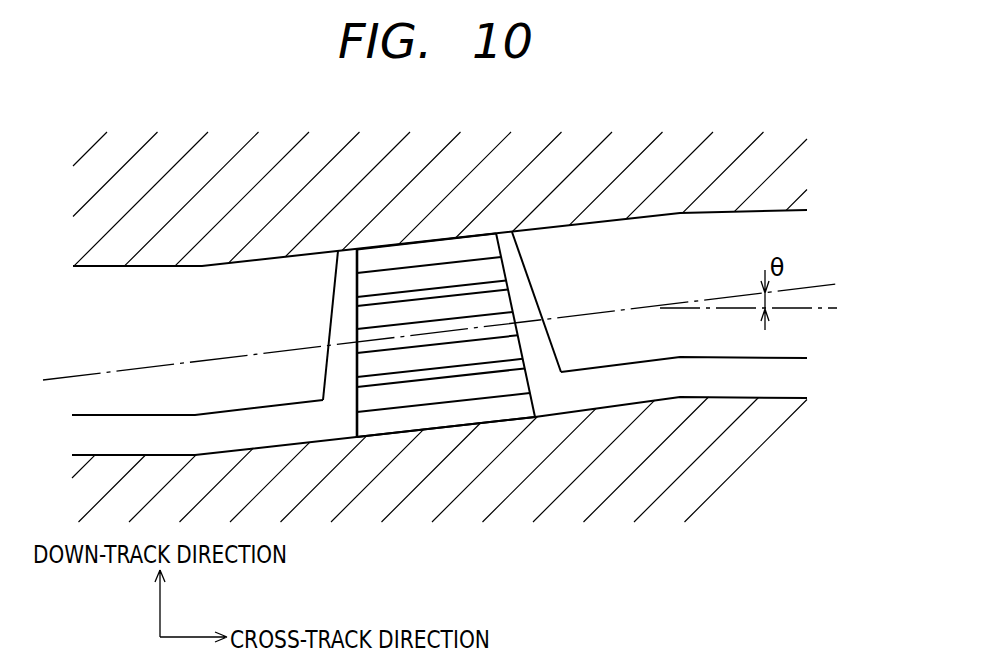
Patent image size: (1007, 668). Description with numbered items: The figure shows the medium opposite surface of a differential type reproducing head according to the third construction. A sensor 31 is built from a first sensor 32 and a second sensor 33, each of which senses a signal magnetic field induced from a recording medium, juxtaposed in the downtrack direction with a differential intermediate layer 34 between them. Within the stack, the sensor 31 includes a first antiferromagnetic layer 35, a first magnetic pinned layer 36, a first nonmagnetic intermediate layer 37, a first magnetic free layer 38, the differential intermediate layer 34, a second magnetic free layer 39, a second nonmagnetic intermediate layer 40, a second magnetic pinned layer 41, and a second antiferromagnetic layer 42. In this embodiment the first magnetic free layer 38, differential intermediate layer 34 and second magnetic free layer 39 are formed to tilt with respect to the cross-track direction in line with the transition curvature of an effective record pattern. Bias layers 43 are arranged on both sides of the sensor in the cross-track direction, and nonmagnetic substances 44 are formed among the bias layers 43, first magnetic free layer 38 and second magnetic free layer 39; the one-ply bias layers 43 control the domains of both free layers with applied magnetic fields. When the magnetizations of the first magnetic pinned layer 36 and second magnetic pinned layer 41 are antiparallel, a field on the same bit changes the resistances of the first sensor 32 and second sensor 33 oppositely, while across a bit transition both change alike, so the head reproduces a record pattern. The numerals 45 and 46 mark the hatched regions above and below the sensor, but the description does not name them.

The sensor 31 is at (297, 438).
The first sensor 32 is at (350, 435).
The second sensor 33 is at (350, 258).
The differential intermediate layer 34 is at (498, 318).
The first antiferromagnetic layer 35 is at (503, 410).
The first magnetic pinned layer 36 is at (465, 388).
The first nonmagnetic intermediate layer 37 is at (418, 375).
The first magnetic free layer 38 is at (385, 367).
The second magnetic free layer 39 is at (470, 303).
The second nonmagnetic intermediate layer 40 is at (433, 290).
The second magnetic pinned layer 41 is at (403, 275).
The second antiferromagnetic layer 42 is at (377, 257).
The bias layers 43 is at (113, 343).
The nonmagnetic substances 44 is at (113, 433).
The upper shield 45 is at (770, 173).
The lower shield 46 is at (767, 478).